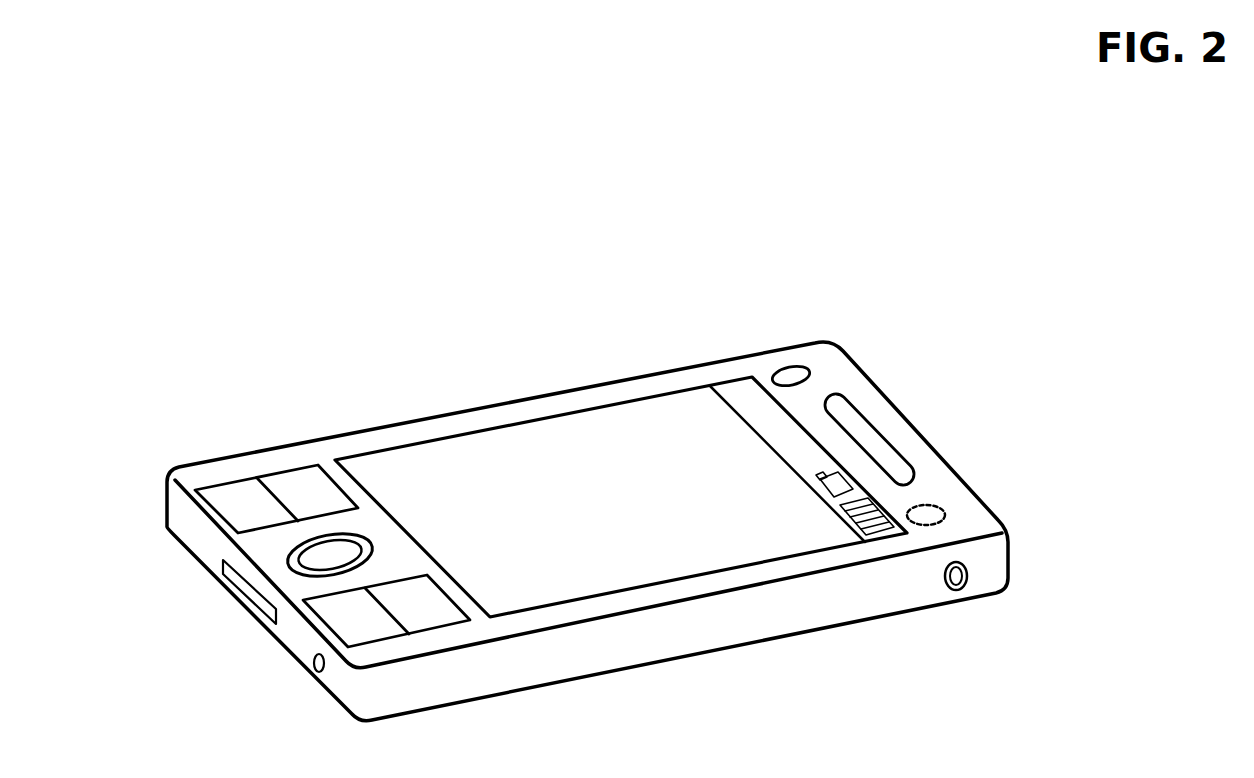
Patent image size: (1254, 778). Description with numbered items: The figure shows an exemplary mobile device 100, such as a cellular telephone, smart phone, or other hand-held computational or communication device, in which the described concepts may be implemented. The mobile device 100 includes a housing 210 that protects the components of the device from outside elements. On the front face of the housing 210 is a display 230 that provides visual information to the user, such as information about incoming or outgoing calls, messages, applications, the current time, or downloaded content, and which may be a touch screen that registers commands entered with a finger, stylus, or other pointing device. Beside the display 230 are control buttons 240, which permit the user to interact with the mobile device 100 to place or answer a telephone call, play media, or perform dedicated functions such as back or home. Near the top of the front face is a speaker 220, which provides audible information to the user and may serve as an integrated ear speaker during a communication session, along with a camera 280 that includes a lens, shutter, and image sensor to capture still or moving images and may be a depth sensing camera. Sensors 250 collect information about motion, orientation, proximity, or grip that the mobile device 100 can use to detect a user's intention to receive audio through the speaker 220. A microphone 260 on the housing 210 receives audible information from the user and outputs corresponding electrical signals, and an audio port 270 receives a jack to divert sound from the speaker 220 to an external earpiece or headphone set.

The mobile device 100 is at (196, 216).
The housing 210 is at (621, 371).
The speaker 220 is at (870, 428).
The display 230 is at (480, 438).
The control buttons 240 is at (289, 473).
The sensors 250 is at (945, 510).
The microphone 260 is at (313, 664).
The audio port 270 is at (955, 590).
The camera 280 is at (808, 376).